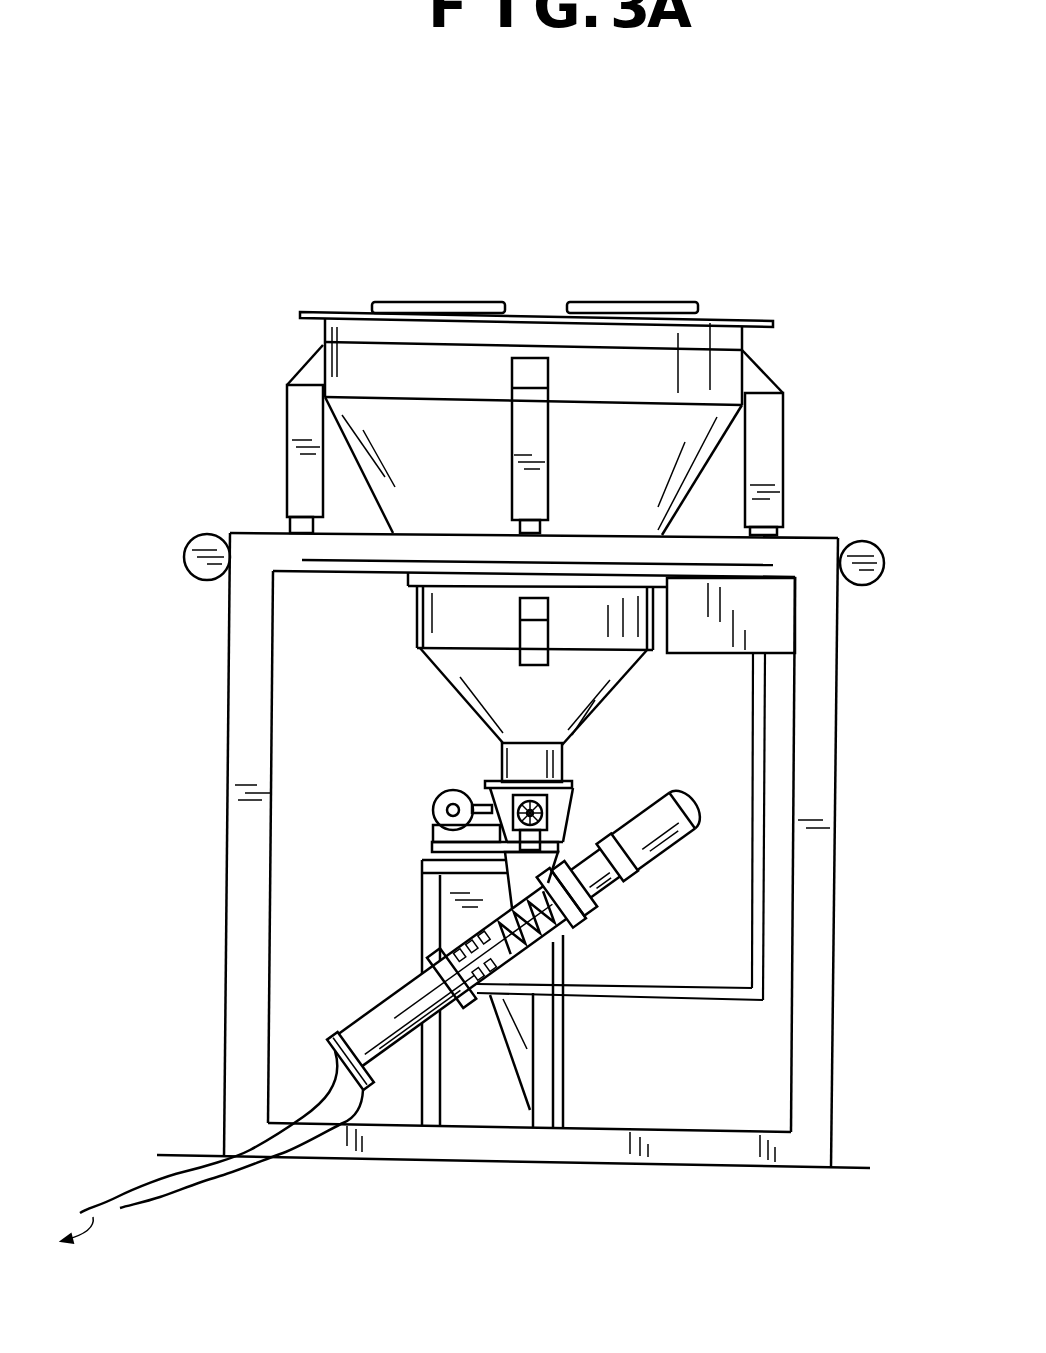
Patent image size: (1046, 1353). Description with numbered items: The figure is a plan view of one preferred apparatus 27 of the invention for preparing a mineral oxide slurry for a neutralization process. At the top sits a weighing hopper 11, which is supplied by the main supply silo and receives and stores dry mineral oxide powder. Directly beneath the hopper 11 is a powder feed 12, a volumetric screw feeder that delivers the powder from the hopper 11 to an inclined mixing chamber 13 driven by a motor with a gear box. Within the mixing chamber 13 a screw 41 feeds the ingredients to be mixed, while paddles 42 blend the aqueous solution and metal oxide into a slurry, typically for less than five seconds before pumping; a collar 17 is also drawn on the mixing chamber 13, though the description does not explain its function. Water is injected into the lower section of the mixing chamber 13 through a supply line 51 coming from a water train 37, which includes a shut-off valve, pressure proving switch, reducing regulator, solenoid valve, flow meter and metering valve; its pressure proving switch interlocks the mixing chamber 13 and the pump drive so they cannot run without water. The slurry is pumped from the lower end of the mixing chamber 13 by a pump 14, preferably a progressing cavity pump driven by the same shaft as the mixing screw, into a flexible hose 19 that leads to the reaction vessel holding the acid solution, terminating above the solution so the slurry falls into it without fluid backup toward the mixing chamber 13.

The weighing hopper 11 is at (650, 300).
The powder feed 12 is at (478, 778).
The mixing chamber 13 is at (458, 932).
The pump 14 is at (338, 1030).
The collar 17 is at (562, 945).
The flexible hose 19 is at (187, 1183).
The apparatus 27 is at (848, 598).
The water train 37 is at (700, 657).
The screw 41 is at (597, 928).
The paddles 42 is at (490, 995).
The supply line 51 is at (767, 810).